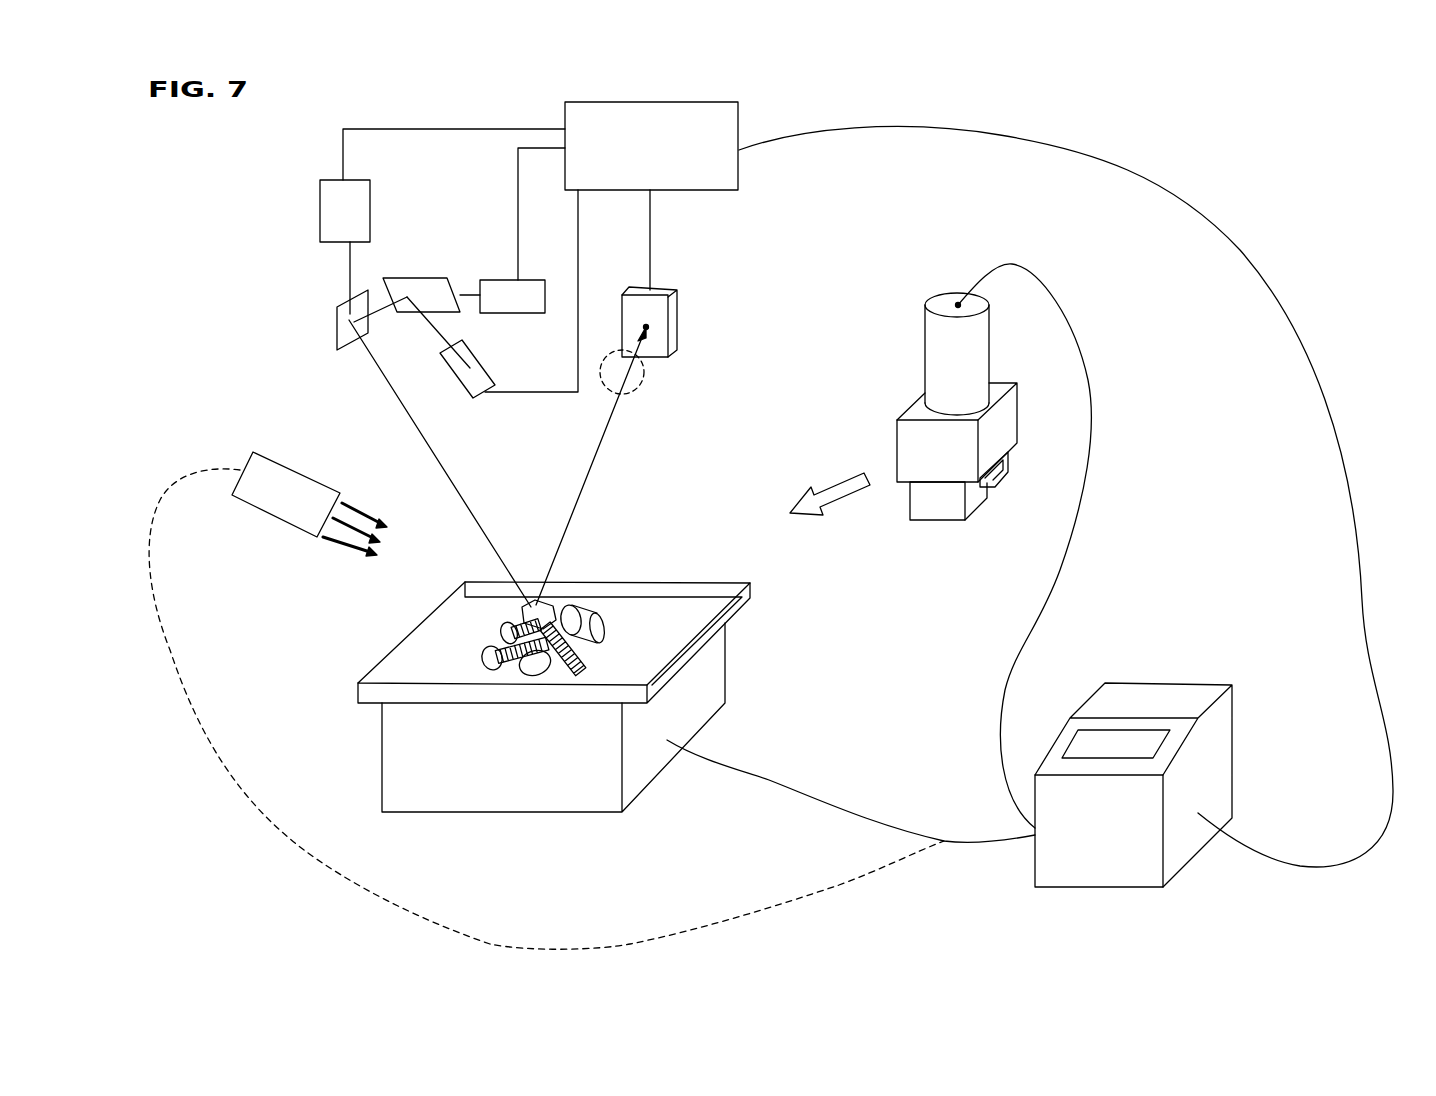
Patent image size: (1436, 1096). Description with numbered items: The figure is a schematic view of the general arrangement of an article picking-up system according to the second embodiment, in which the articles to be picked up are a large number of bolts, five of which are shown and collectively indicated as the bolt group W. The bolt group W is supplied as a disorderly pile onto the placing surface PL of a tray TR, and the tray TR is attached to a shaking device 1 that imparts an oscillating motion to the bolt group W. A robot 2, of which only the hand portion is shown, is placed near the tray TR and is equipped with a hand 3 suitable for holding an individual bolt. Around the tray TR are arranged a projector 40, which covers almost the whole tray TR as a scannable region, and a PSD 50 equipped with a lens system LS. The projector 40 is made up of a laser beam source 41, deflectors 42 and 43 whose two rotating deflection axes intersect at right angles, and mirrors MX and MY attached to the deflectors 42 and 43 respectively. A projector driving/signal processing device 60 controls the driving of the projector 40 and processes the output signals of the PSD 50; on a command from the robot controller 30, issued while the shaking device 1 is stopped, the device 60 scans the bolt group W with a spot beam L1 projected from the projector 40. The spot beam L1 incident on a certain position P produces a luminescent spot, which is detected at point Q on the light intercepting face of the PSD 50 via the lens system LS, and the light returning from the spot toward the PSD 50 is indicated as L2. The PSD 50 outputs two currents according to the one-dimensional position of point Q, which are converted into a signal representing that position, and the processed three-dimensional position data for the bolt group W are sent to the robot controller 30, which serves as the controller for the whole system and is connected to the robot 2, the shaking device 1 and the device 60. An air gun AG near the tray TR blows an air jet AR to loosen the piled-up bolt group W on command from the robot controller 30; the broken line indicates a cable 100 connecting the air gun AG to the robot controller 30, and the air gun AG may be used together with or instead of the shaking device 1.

The projector driving/signal processing device 60 is at (740, 128).
The projector 40 is at (343, 130).
The deflector 43 is at (330, 205).
The mirror MY is at (345, 325).
The mirror MX is at (427, 290).
The deflector 42 is at (510, 302).
The laser beam source 41 is at (470, 385).
The spot beam L1 is at (390, 428).
The reflected light L2 is at (603, 450).
The PSD 50 is at (660, 349).
The point Q is at (648, 326).
The lens system LS is at (643, 395).
The robot 2 is at (933, 368).
The hand 3 is at (1003, 477).
The air gun AG is at (263, 498).
The air jet AR is at (343, 542).
The tray TR is at (382, 670).
The placing surface PL is at (444, 676).
The shaking device 1 is at (403, 763).
The bolt group W is at (483, 613).
The position P is at (523, 610).
The robot controller 30 is at (1100, 870).
The cable 100 is at (576, 944).